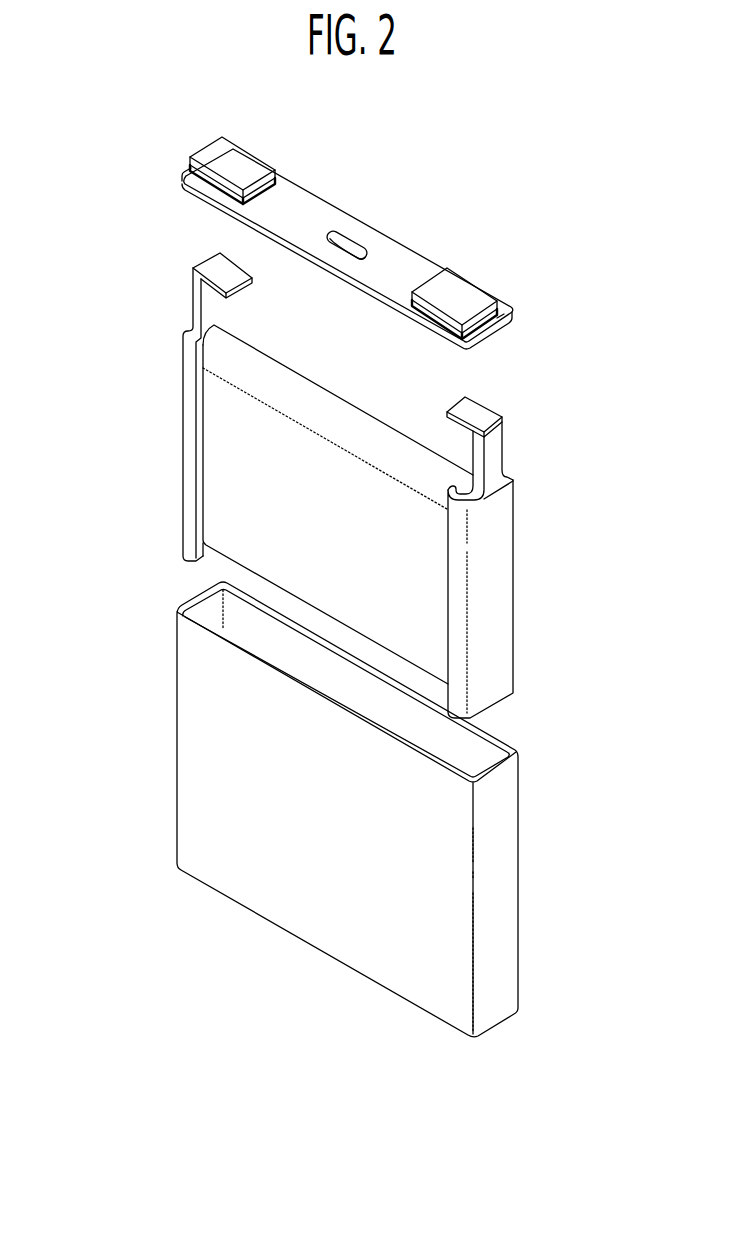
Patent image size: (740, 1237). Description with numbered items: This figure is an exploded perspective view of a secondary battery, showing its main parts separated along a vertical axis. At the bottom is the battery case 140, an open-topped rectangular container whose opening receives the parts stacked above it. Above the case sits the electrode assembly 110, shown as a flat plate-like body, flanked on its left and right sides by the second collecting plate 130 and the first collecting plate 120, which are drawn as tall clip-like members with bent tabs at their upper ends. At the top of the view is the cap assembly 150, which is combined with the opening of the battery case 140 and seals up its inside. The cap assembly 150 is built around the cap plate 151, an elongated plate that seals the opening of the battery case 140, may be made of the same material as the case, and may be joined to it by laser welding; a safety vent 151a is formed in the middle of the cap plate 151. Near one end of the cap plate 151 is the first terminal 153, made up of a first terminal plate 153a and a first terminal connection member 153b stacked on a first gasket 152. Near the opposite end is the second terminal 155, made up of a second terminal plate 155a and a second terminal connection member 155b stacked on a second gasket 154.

The electrode assembly 110 is at (325, 410).
The first collecting plate 120 is at (500, 565).
The second collecting plate 130 is at (183, 447).
The battery case 140 is at (505, 810).
The cap assembly 150 is at (313, 191).
The cap plate 151 is at (348, 244).
The safety vent 151a is at (355, 240).
The first gasket 152 is at (498, 328).
The first terminal 153 is at (530, 294).
The first terminal plate 153a is at (497, 308).
The first terminal connection member 153b is at (458, 288).
The second gasket 154 is at (202, 197).
The second terminal 155 is at (153, 164).
The second terminal plate 155a is at (193, 172).
The second terminal connection member 155b is at (210, 152).